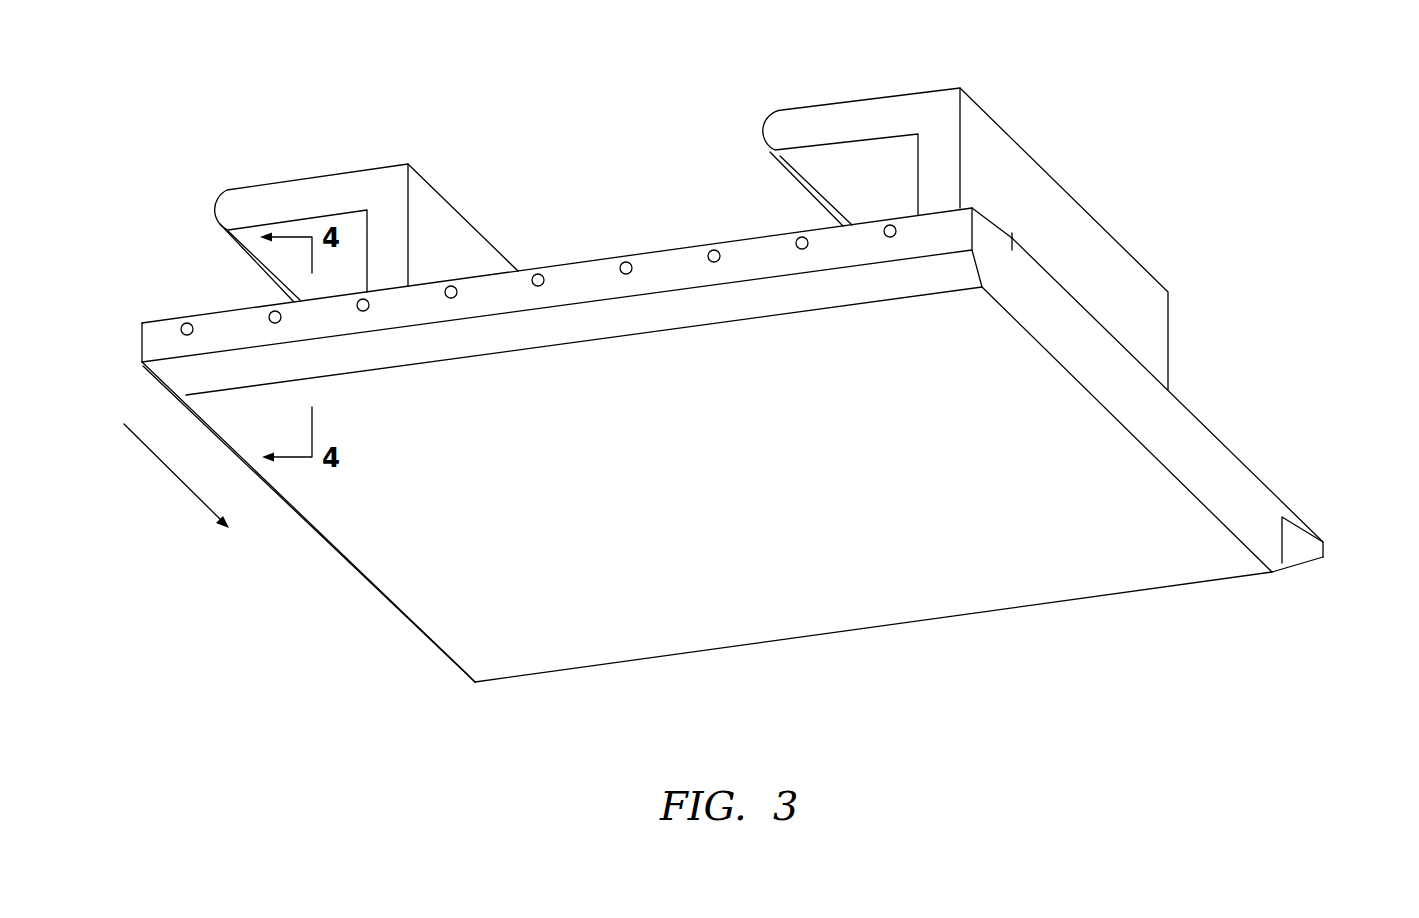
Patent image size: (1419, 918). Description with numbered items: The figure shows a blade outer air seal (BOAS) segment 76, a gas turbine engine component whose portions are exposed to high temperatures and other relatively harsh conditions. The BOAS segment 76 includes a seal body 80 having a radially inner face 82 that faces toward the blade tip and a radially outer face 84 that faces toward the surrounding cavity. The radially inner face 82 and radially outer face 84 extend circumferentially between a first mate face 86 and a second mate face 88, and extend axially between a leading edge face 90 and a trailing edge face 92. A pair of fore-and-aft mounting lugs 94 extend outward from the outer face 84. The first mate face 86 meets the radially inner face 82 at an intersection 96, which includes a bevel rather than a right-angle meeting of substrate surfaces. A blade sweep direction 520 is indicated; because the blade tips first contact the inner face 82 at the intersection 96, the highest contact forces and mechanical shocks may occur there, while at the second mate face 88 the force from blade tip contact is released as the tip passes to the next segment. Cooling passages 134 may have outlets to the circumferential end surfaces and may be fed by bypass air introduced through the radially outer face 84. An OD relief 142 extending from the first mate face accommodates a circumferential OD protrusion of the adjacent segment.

The BOAS segment 76 is at (1138, 196).
The seal body 80 is at (1340, 545).
The radially inner face 82 is at (523, 651).
The radially outer face 84 is at (677, 219).
The first mate face 86 is at (583, 272).
The second mate face 88 is at (1275, 571).
The leading edge face 90 is at (142, 341).
The trailing edge face 92 is at (1200, 437).
The mounting lugs 94 is at (333, 176).
The intersection 96 is at (960, 269).
The cooling passages 134 is at (869, 650).
The OD relief 142 is at (766, 578).
The blade sweep direction 520 is at (164, 467).